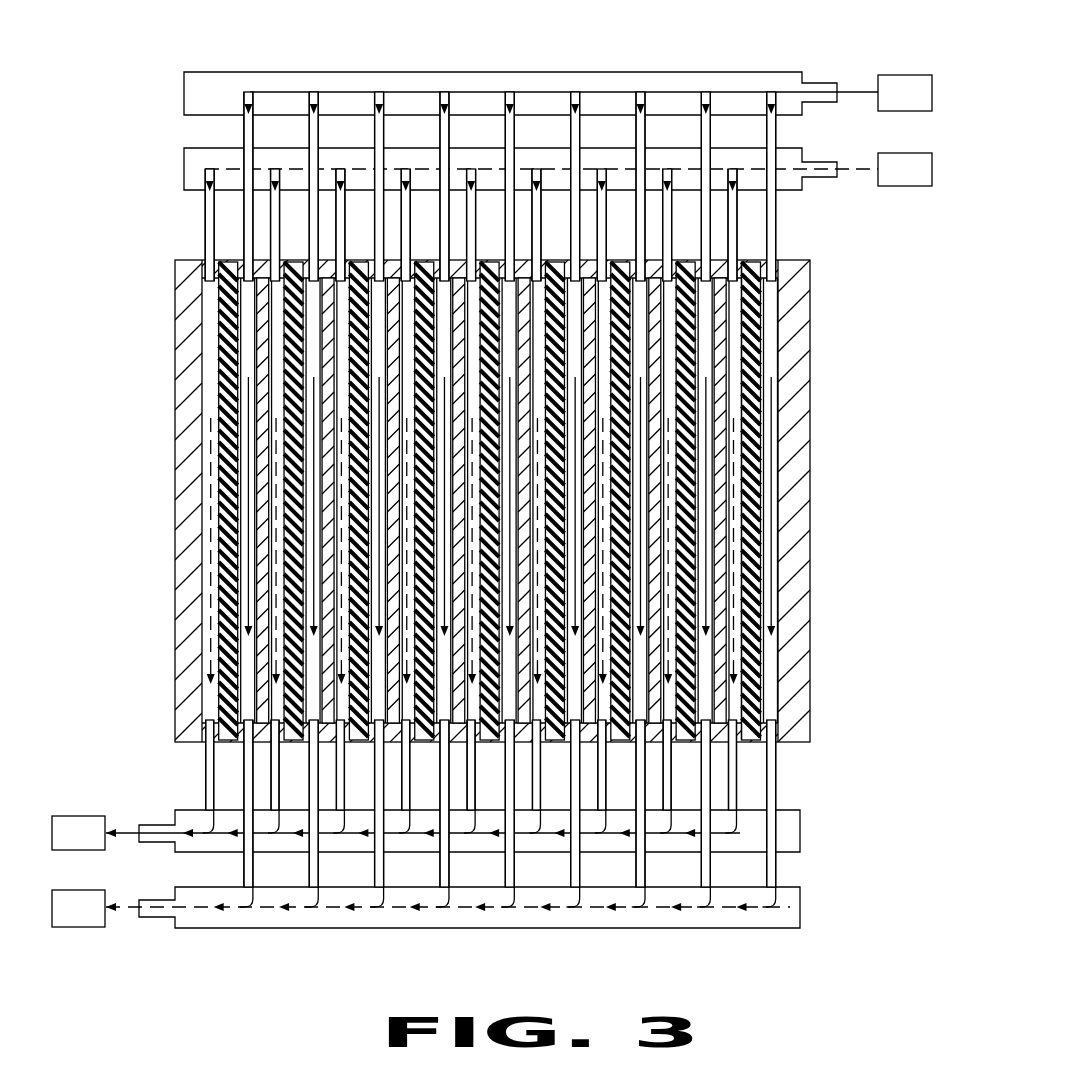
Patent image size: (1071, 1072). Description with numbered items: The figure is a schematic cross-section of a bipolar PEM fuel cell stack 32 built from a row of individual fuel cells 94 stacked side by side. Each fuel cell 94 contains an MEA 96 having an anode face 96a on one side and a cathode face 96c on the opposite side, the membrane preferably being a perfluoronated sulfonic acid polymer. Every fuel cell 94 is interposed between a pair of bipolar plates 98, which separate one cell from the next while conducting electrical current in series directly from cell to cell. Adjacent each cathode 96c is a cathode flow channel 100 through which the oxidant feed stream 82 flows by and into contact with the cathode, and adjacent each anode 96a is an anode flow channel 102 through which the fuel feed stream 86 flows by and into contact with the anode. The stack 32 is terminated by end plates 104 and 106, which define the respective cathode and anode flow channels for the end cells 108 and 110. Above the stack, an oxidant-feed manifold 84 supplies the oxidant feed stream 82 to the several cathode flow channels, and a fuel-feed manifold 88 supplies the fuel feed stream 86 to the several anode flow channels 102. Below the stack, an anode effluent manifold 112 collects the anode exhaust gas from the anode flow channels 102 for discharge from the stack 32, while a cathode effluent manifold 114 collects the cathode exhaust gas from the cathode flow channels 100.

The fuel cell stack 32 is at (818, 293).
The oxidant feed stream 82 is at (858, 91).
The oxidant-feed manifold 84 is at (783, 72).
The fuel feed stream 86 is at (847, 174).
The fuel-feed manifold 88 is at (795, 156).
The fuel cell 94 is at (298, 253).
The MEA 96 is at (776, 368).
The anode face 96a is at (738, 434).
The cathode face 96c is at (762, 494).
The bipolar plate 98 is at (720, 262).
The cathode flow channel 100 is at (768, 712).
The anode flow channel 102 is at (735, 668).
The end plate 104 is at (792, 643).
The end plate 106 is at (175, 623).
The end cell 108 is at (780, 338).
The end cell 110 is at (213, 305).
The anode effluent manifold 112 is at (180, 810).
The cathode effluent manifold 114 is at (182, 926).